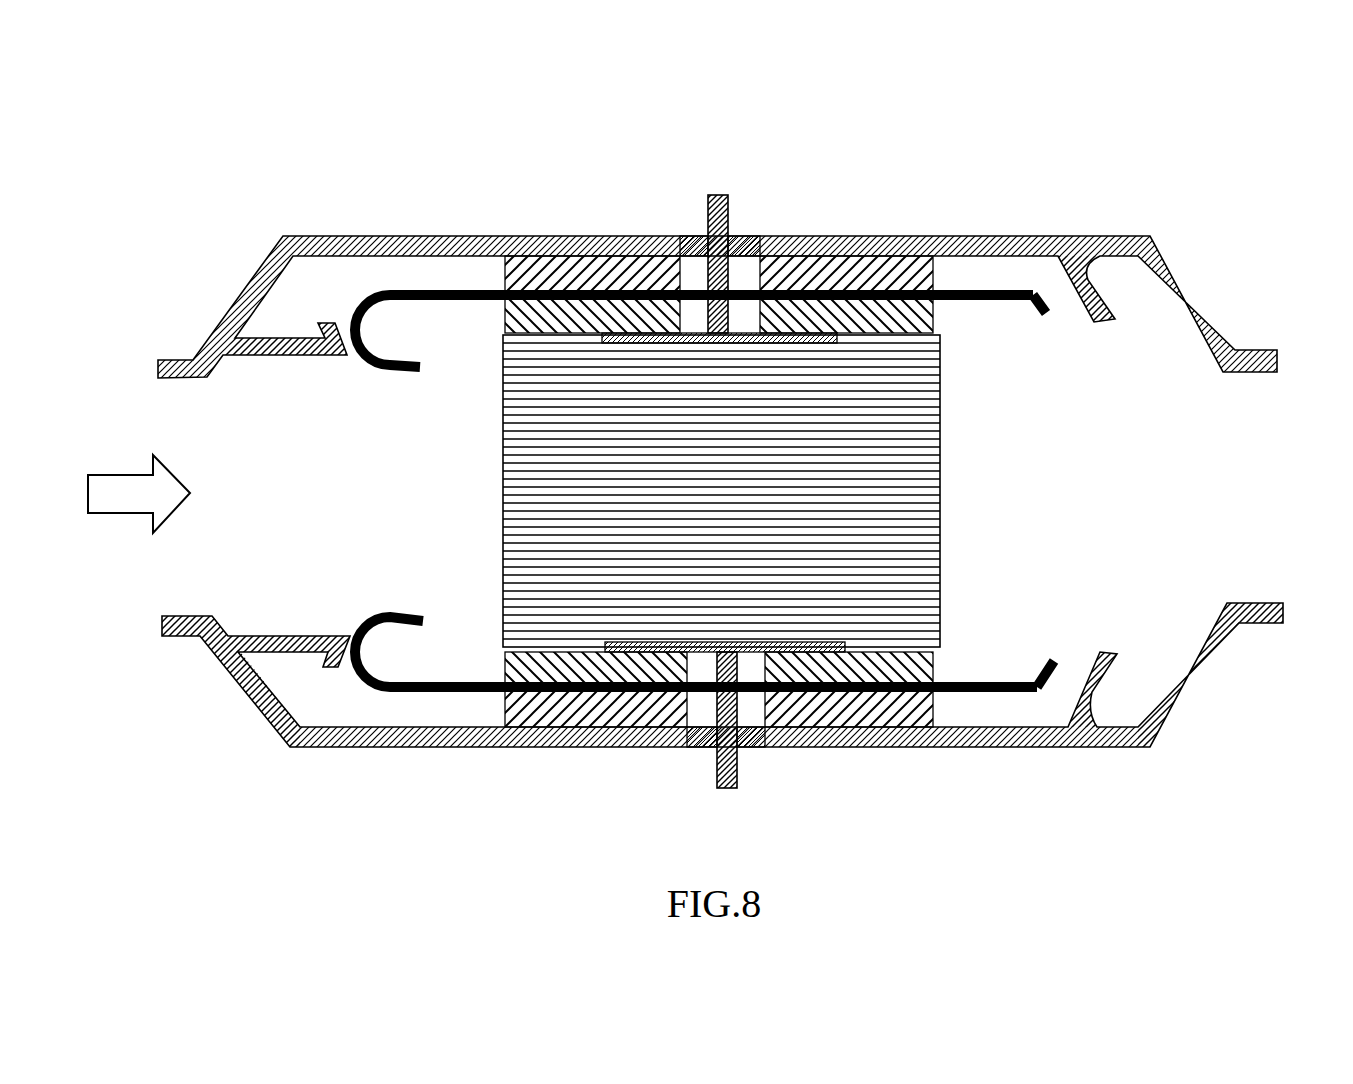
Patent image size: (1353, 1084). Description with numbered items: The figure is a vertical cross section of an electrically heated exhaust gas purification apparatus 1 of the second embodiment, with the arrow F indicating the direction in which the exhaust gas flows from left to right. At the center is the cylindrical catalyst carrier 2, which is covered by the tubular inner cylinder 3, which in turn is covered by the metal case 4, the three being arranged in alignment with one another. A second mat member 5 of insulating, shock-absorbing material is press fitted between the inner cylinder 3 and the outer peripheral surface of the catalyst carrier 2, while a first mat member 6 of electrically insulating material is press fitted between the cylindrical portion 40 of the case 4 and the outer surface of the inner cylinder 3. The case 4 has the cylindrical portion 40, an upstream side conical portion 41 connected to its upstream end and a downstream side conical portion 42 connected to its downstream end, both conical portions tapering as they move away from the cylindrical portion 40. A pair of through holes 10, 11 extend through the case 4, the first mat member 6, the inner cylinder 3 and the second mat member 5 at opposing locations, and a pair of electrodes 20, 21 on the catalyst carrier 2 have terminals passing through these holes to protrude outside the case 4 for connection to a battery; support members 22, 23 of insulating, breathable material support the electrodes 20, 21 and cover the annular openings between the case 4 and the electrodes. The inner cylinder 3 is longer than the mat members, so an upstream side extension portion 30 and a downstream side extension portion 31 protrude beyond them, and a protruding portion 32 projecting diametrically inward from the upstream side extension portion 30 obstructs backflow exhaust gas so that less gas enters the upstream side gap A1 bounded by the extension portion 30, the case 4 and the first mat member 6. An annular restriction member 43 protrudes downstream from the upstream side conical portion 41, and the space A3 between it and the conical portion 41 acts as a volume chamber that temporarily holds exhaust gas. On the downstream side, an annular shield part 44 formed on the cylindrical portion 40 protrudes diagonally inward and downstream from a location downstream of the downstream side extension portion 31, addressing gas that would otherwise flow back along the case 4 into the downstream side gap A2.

The exhaust gas purification apparatus 1 is at (1195, 190).
The catalyst carrier 2 is at (945, 490).
The inner cylinder 3 is at (970, 315).
The case 4 is at (300, 223).
The second mat member 5 is at (500, 665).
The first mat member 6 is at (612, 263).
The through hole 10 is at (700, 262).
The through hole 11 is at (755, 748).
The electrode 20 is at (723, 195).
The electrode 21 is at (727, 790).
The support member 22 is at (748, 236).
The support member 23 is at (700, 750).
The upstream side extension portion 30 is at (432, 297).
The downstream side extension portion 31 is at (1000, 288).
The protruding portion 32 is at (418, 625).
The cylindrical portion 40 is at (860, 240).
The upstream side conical portion 41 is at (248, 690).
The downstream side conical portion 42 is at (1192, 705).
The restriction member 43 is at (285, 640).
The shield part 44 is at (1107, 300).
The upstream side gap A1 is at (466, 278).
The downstream side gap A2 is at (955, 262).
The space A3 is at (280, 311).
The exhaust gas flow direction F is at (139, 490).